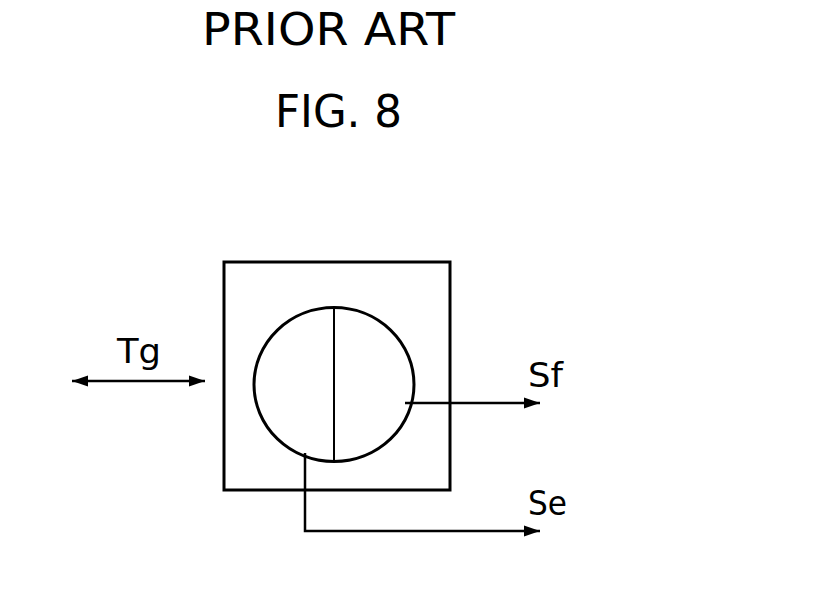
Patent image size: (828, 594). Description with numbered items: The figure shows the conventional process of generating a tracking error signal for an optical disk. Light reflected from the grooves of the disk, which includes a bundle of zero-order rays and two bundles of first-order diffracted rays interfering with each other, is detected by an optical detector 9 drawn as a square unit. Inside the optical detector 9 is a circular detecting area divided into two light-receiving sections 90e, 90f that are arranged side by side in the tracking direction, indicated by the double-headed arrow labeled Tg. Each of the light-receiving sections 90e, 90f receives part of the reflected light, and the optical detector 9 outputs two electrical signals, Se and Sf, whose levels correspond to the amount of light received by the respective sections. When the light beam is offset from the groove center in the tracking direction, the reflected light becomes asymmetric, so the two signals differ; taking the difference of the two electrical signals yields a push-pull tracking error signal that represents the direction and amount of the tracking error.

The optical detector 9 is at (422, 254).
The light-receiving section 90e is at (294, 385).
The light-receiving section 90f is at (374, 385).